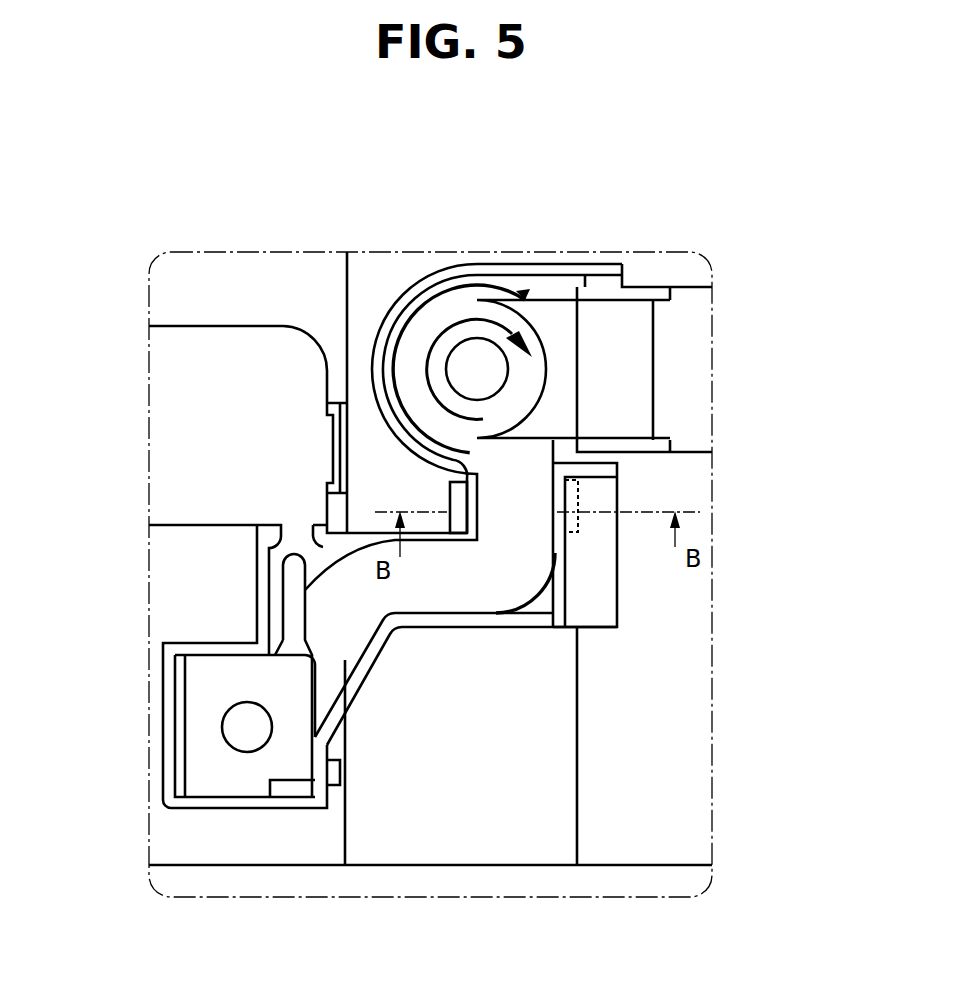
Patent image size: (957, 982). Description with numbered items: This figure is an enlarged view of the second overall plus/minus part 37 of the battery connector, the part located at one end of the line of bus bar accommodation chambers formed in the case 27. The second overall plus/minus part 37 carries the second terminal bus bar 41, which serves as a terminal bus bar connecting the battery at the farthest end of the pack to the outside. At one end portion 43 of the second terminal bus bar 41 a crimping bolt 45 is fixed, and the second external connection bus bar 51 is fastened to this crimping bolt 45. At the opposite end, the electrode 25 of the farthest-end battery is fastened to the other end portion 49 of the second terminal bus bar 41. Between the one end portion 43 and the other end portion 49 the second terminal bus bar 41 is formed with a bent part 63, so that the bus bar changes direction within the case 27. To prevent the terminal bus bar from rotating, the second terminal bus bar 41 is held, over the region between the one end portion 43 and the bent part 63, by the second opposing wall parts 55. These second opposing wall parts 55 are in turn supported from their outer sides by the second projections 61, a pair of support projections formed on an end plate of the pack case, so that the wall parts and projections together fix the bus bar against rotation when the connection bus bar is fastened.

The electrode 25 is at (245, 727).
The case 27 is at (619, 612).
The second overall plus/minus part 37 is at (712, 897).
The second terminal bus bar 41 is at (355, 579).
The one end portion 43 is at (437, 293).
The crimping bolt 45 is at (490, 383).
The other end portion 49 is at (318, 697).
The second external connection bus bar 51 is at (549, 312).
The second opposing wall parts 55 is at (553, 505).
The second projections 61 is at (448, 497).
The bent part 63 is at (540, 598).